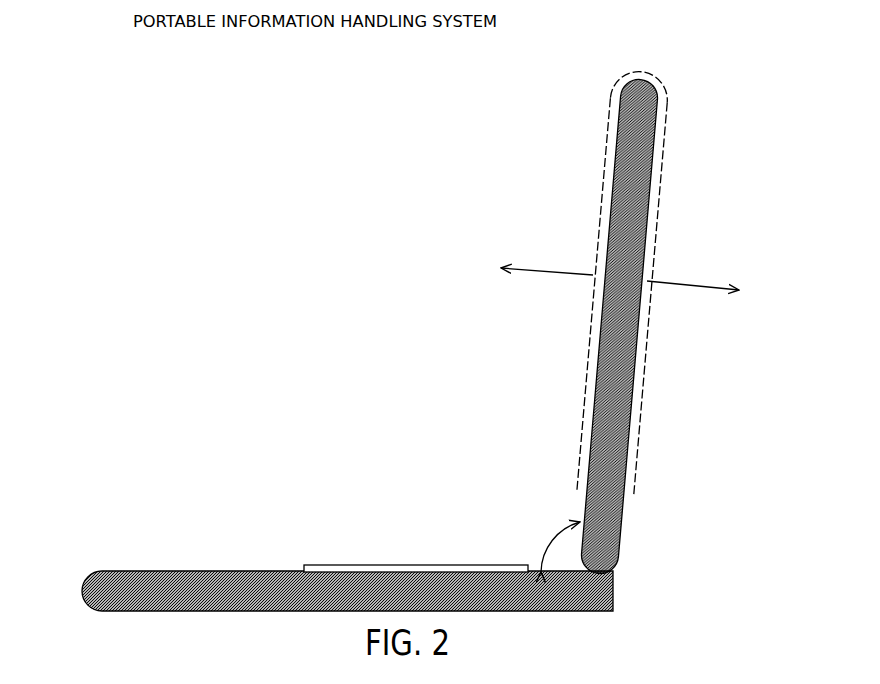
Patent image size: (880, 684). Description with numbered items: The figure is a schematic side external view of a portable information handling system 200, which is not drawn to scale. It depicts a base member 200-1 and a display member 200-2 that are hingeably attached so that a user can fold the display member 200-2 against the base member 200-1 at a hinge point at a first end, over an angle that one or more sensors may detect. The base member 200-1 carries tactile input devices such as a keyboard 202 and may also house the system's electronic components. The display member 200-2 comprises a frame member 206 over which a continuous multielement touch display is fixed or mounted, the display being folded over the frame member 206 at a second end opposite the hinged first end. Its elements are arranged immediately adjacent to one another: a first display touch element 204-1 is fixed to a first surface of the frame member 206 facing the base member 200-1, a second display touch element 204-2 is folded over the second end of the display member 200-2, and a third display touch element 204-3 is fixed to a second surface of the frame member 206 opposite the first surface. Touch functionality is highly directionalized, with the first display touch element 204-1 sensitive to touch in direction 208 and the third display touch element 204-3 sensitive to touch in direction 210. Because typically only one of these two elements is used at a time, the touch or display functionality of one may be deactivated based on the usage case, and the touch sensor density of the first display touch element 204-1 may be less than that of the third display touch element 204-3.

The portable information handling system 200 is at (89, 36).
The base member 200-1 is at (193, 578).
The display member 200-2 is at (589, 89).
The keyboard 202 is at (304, 565).
The first display touch element 204-1 is at (603, 180).
The second display touch element 204-2 is at (631, 70).
The third display touch element 204-3 is at (659, 183).
The frame member 206 is at (619, 507).
The direction 208 is at (540, 268).
The direction 210 is at (692, 284).